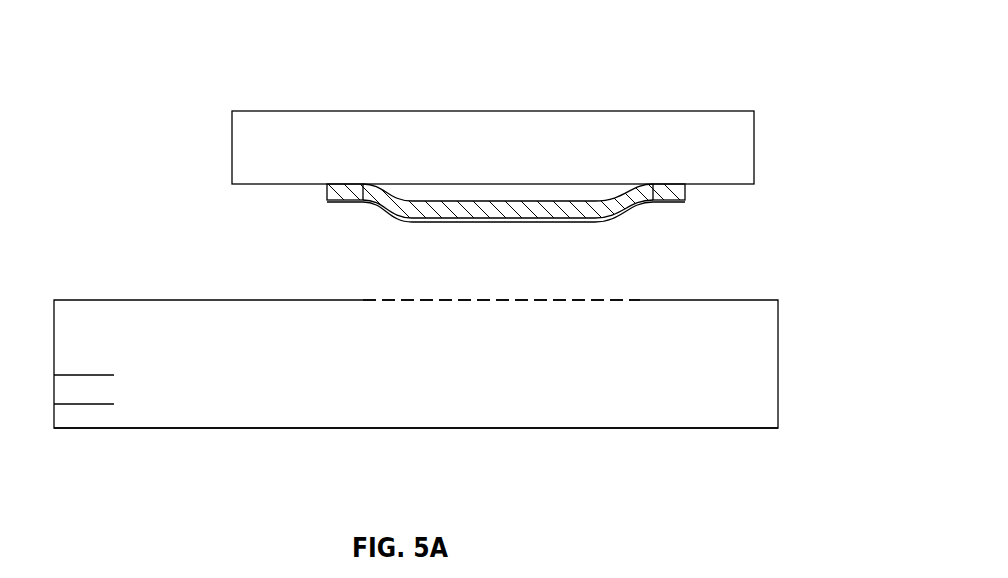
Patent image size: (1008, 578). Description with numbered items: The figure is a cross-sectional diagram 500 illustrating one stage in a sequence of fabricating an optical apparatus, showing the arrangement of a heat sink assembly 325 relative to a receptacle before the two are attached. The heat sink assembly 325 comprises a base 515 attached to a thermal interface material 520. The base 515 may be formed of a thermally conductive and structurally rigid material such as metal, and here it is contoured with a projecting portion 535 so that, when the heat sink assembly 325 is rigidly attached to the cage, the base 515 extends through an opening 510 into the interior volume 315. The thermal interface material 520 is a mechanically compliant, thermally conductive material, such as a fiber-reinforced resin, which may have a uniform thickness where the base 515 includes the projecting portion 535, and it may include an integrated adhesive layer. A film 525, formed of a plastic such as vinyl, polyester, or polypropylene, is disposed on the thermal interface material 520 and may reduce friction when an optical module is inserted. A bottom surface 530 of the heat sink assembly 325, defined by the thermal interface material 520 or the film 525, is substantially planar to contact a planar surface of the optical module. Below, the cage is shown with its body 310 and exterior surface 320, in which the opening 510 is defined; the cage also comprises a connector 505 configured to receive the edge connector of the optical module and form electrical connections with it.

The diagram 500 is at (774, 45).
The heat sink assembly 325 is at (762, 107).
The base 515 is at (245, 150).
The thermal interface material 520 is at (362, 198).
The film 525 is at (398, 223).
The bottom surface 530 is at (463, 223).
The projecting portion 535 is at (580, 182).
The substrate body 310 is at (778, 328).
The exterior surface 320 is at (685, 300).
The opening 510 is at (478, 305).
The connector 505 is at (90, 393).
The interior volume 315 is at (655, 413).